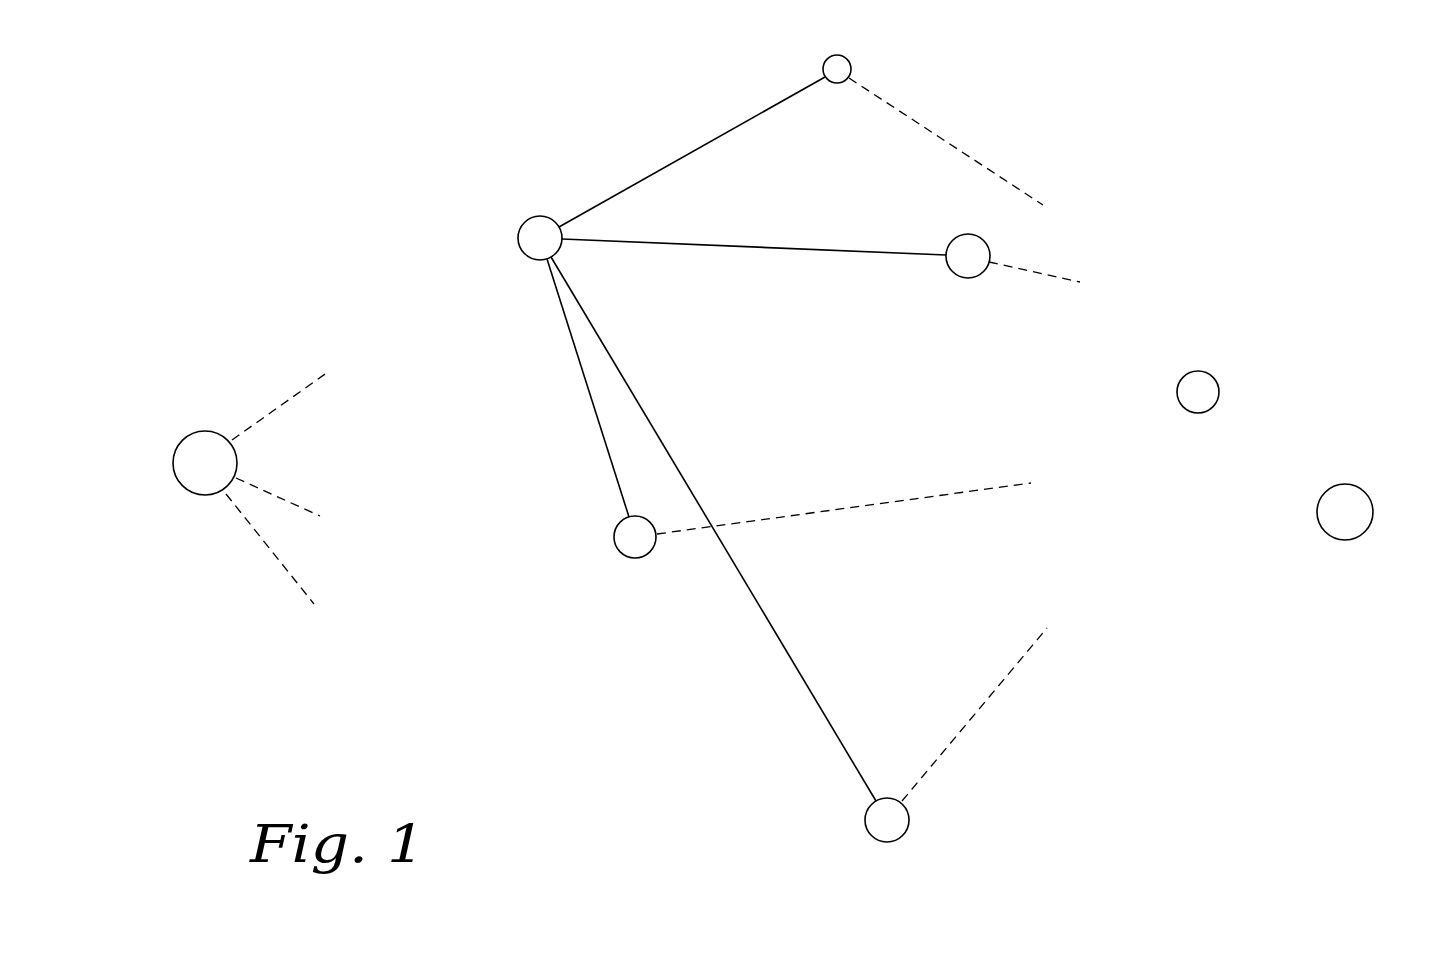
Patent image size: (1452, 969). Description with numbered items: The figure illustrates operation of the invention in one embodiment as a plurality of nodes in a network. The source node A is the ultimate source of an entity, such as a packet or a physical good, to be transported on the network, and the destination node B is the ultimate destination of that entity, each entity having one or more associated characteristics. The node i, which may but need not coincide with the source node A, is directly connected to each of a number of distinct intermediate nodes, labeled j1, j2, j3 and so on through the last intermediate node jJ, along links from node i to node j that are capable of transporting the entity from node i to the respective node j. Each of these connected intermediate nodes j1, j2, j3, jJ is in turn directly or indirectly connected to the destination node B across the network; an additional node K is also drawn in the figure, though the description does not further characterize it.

The node i is at (523, 238).
The intermediate node j1 is at (843, 66).
The intermediate node j2 is at (984, 253).
The intermediate node j3 is at (636, 549).
The intermediate node jJ(μ) jJ is at (886, 835).
The node K is at (1212, 392).
The source node A(μ) A is at (197, 484).
The destination node B(μ) B is at (1340, 537).